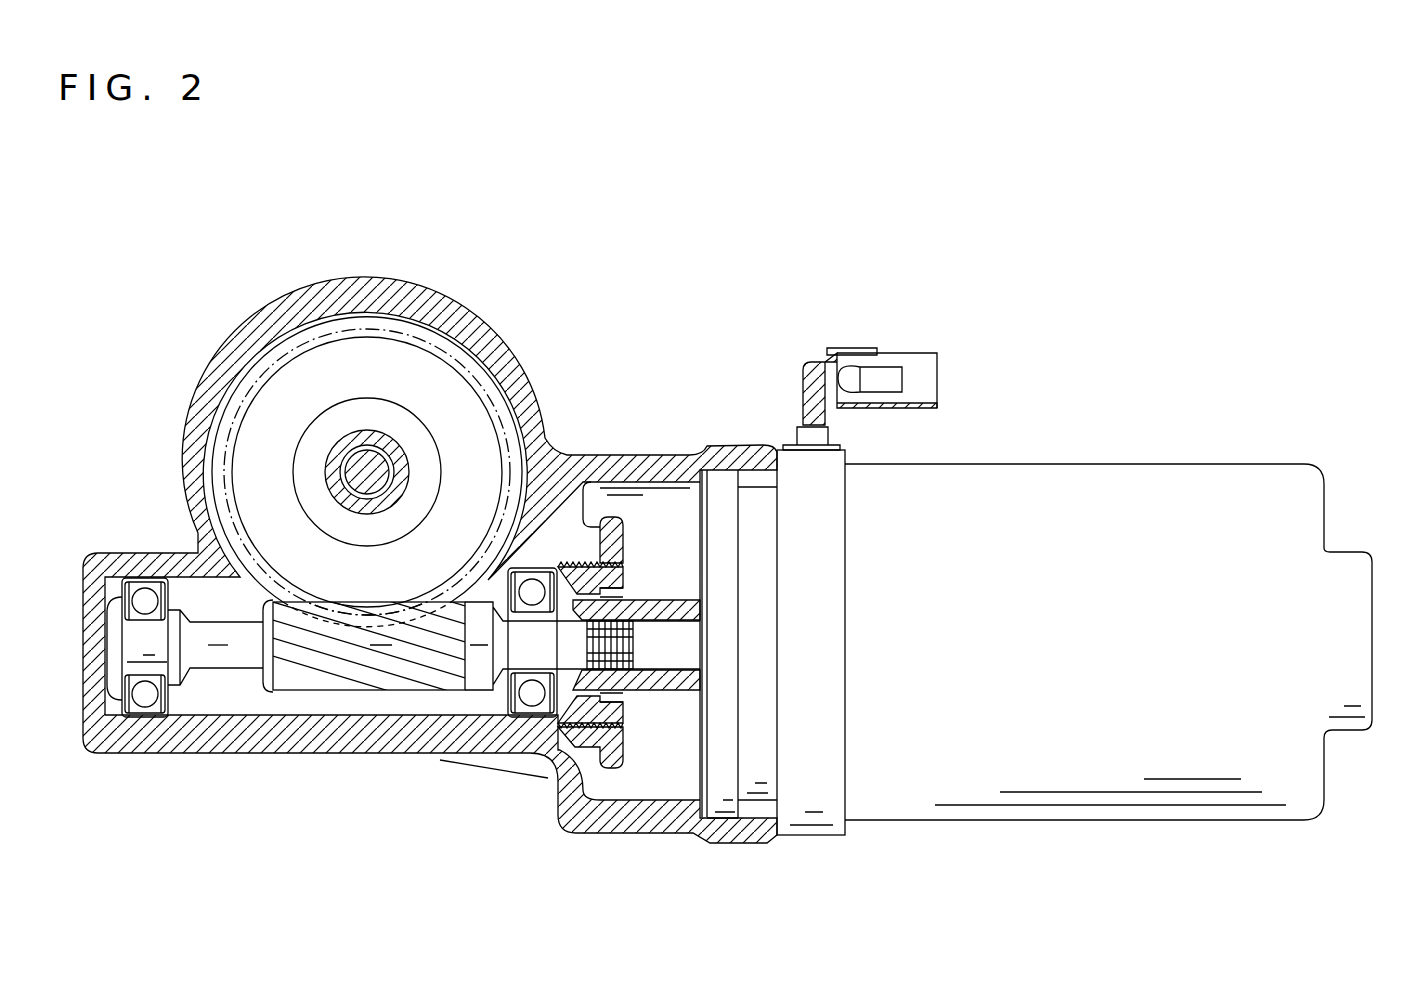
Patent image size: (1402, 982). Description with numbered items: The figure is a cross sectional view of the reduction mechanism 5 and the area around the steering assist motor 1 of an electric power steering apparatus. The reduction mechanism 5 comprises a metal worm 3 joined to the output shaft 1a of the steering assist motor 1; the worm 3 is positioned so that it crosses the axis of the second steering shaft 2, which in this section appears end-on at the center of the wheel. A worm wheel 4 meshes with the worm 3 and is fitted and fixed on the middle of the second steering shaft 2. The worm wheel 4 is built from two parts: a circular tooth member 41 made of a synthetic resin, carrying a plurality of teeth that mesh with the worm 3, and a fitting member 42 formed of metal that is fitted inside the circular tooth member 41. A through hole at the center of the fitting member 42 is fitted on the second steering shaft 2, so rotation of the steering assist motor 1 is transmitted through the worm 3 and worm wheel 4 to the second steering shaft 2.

The steering assist motor 1 is at (1118, 470).
The output shaft 1a is at (678, 648).
The second steering shaft 2 is at (358, 430).
The worm 3 is at (357, 678).
The worm wheel 4 is at (198, 433).
The circular tooth member 41 is at (255, 405).
The fitting member 42 is at (317, 420).
The reduction mechanism 5 is at (260, 683).